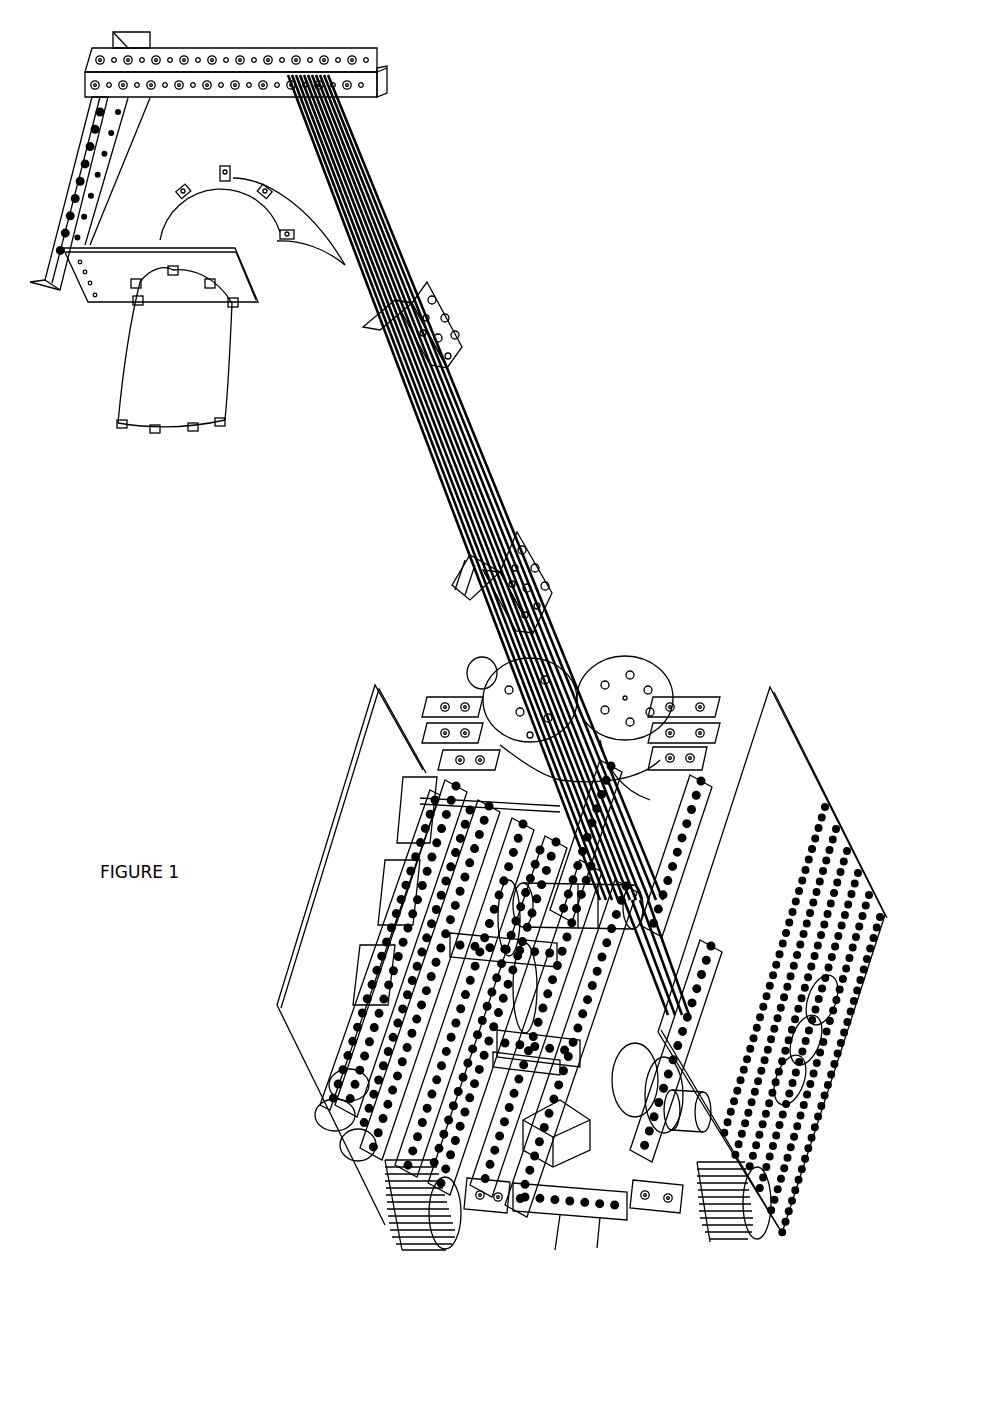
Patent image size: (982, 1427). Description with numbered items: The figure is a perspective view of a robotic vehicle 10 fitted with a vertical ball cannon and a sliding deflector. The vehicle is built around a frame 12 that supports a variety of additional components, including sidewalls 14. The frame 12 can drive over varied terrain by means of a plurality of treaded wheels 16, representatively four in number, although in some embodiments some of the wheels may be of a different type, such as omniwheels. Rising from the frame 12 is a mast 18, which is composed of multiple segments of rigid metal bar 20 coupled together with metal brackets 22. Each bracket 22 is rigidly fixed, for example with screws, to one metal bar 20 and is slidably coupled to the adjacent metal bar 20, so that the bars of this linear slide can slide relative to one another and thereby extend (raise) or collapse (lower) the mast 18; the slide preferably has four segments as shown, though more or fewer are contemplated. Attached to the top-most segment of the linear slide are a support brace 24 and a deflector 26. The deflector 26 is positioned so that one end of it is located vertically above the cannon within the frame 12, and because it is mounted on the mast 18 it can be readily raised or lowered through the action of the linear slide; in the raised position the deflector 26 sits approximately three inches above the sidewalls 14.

The robotic vehicle 10 is at (715, 557).
The frame 12 is at (682, 1213).
The sidewalls 14 is at (303, 907).
The treaded wheels 16 is at (417, 1253).
The mast 18 is at (483, 440).
The metal bar 20 is at (467, 610).
The metal brackets 22 is at (457, 333).
The support brace 24 is at (247, 52).
The deflector 26 is at (265, 237).